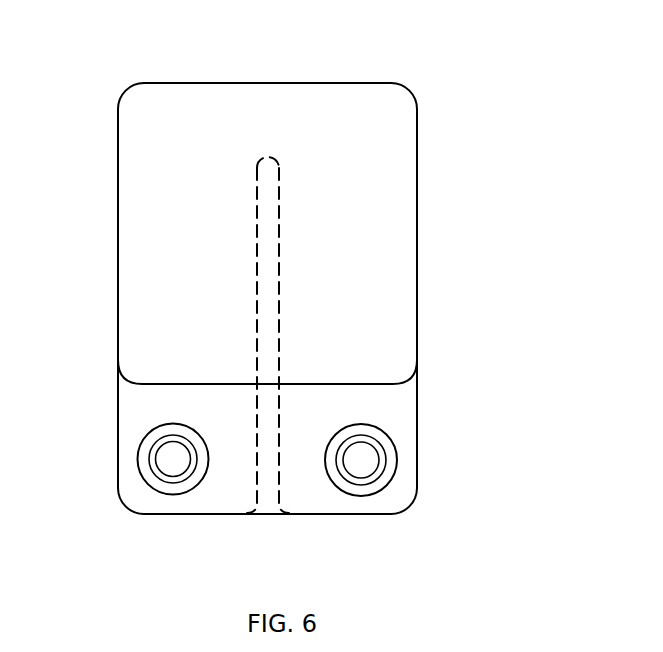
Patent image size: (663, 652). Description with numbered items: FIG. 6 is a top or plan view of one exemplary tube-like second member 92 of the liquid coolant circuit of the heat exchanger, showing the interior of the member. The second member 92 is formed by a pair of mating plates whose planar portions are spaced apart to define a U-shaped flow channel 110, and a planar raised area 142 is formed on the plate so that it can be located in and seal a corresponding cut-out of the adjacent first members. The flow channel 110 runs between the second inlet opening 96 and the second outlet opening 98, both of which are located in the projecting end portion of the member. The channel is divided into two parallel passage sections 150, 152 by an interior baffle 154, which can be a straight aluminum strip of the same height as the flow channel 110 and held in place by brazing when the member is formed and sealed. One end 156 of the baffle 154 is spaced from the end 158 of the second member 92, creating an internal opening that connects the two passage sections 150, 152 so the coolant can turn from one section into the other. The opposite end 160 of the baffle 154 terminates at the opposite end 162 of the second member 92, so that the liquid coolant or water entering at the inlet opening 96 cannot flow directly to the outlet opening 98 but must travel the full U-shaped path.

The tube-like second member 92 is at (450, 180).
The second inlet opening 96 is at (365, 462).
The second outlet opening 98 is at (173, 459).
The U-shaped flow channel 110 is at (182, 262).
The planar raised area 142 is at (388, 243).
The first passage section 150 is at (170, 340).
The second passage section 152 is at (373, 316).
The interior baffle 154 is at (265, 194).
The end of baffle 156 is at (273, 157).
The end of second member 158 is at (165, 83).
The opposite end of baffle 160 is at (267, 514).
The opposite end of second member 162 is at (177, 513).